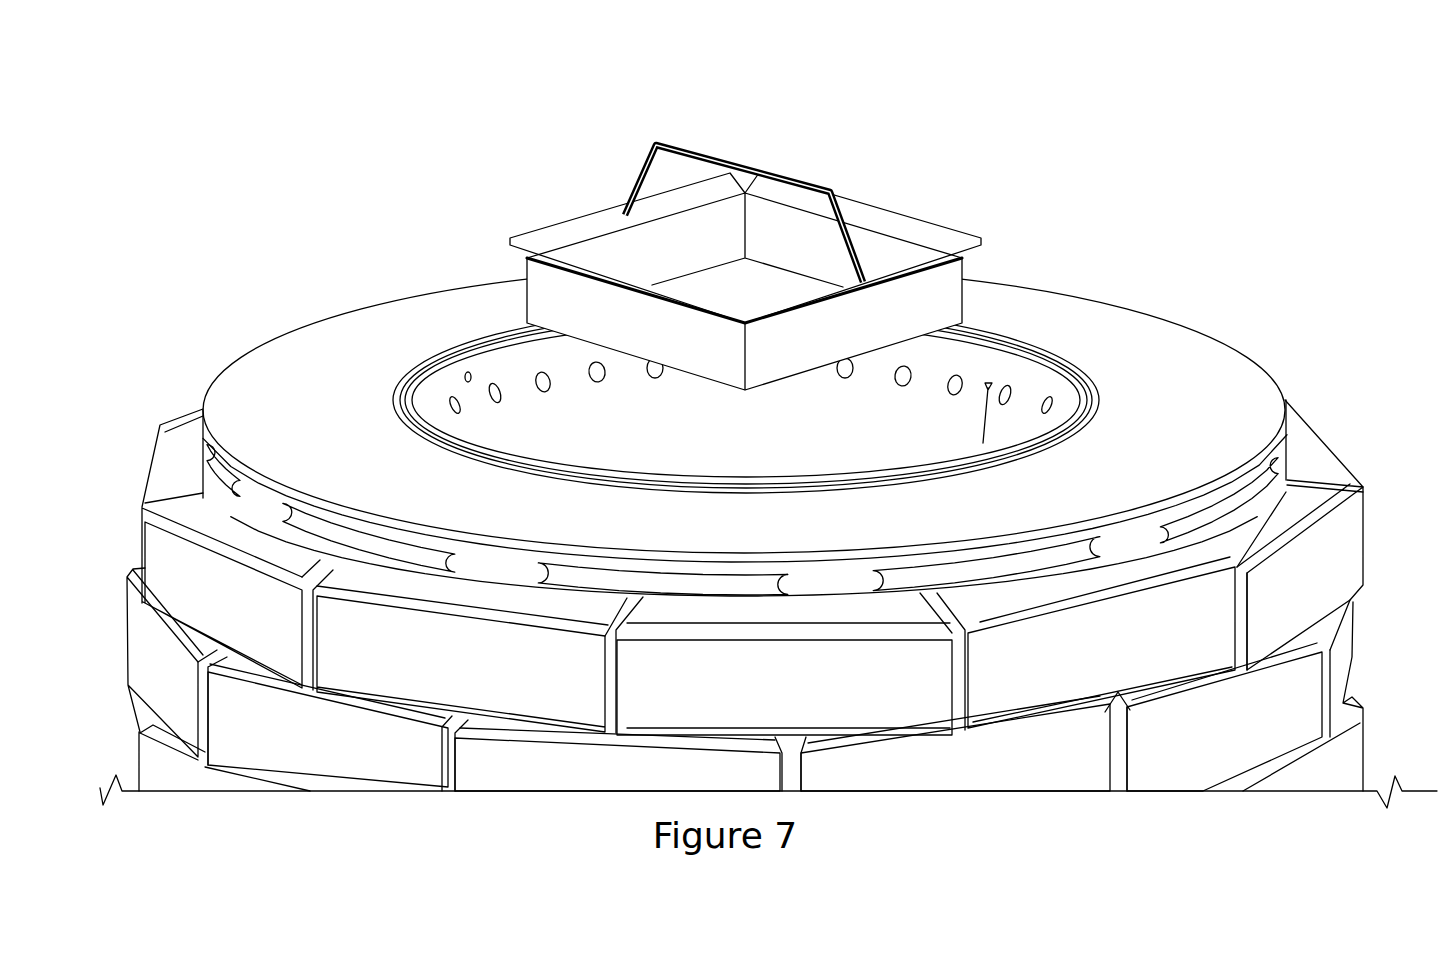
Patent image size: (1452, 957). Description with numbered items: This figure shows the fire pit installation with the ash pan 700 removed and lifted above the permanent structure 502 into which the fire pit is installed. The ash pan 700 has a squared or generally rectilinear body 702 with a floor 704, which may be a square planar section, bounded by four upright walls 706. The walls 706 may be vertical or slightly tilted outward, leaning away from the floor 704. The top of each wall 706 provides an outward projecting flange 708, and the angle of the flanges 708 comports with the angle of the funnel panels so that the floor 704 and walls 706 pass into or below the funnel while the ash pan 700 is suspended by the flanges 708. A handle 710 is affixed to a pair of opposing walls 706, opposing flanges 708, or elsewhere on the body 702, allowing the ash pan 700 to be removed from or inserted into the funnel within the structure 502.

The ash pan 700 is at (770, 439).
The body 702 is at (745, 244).
The floor 704 is at (757, 287).
The upright walls 706 is at (590, 255).
The flange 708 is at (537, 230).
The handle 710 is at (737, 165).
The permanent structure 502 is at (1365, 538).